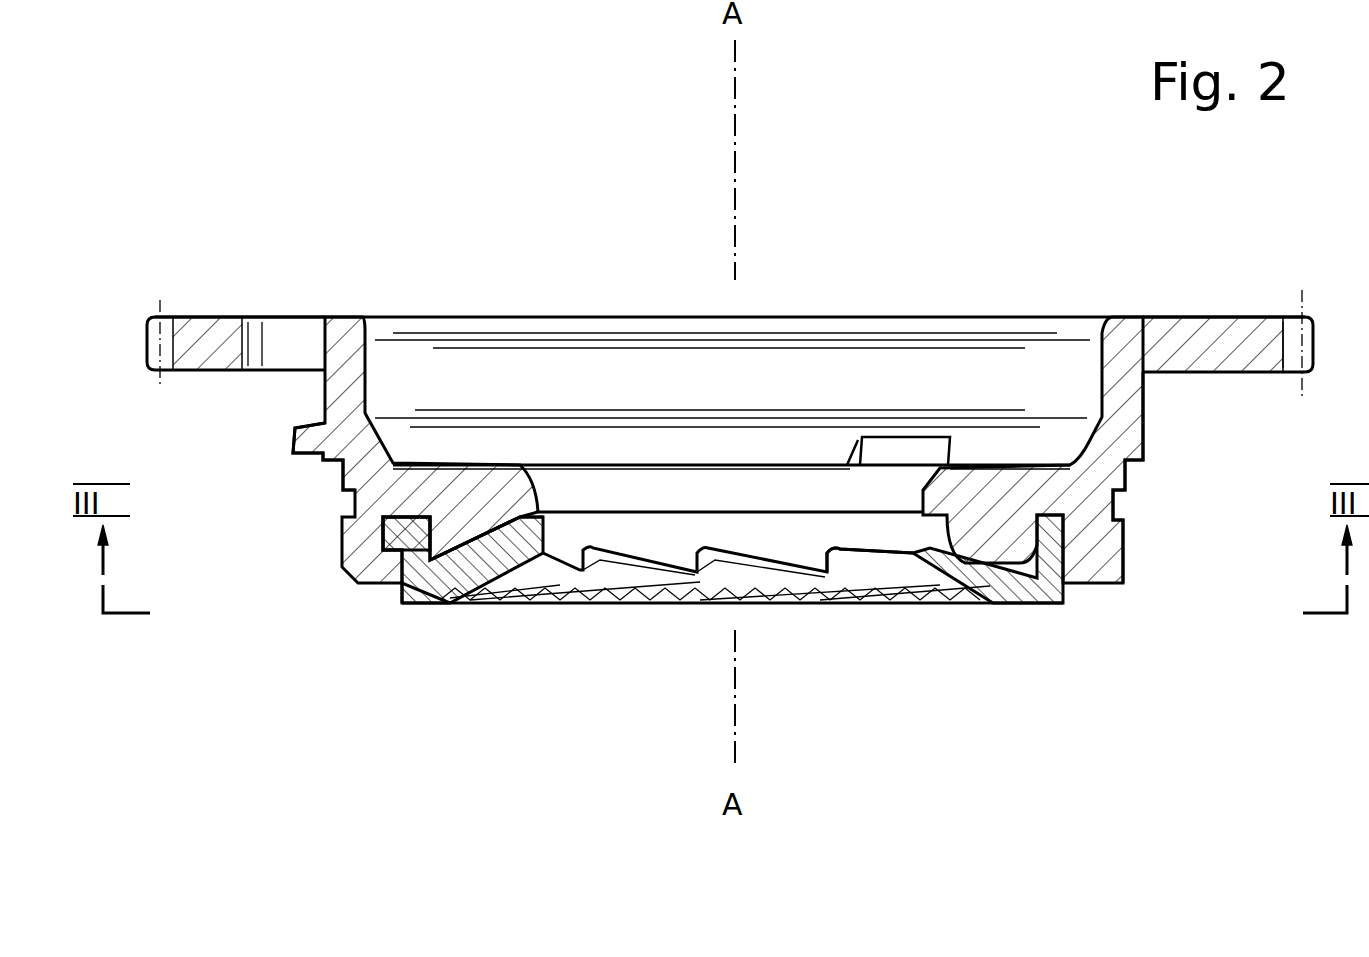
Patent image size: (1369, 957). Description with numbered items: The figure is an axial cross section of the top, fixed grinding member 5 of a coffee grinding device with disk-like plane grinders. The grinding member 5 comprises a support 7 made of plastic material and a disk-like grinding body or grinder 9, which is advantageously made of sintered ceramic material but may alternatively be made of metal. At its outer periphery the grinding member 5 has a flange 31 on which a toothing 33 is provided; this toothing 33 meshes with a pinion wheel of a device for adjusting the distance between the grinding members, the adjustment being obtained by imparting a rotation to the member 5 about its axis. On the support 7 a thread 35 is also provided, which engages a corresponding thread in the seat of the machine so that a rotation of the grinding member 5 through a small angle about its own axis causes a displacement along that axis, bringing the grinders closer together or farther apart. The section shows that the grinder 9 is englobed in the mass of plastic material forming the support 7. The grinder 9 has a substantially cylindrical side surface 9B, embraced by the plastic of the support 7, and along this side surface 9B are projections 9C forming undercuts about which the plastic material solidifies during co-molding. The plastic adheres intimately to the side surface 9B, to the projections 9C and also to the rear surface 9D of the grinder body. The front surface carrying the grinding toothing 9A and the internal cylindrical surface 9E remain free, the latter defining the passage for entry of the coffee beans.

The first grinding member 5 is at (985, 250).
The support 7 is at (1168, 432).
The grinder 9 is at (447, 600).
The toothing 9A is at (635, 600).
The cylindrical side surface 9B is at (392, 597).
The projections 9C is at (383, 527).
The rear surface 9D is at (505, 525).
The internal cylindrical surface 9E is at (800, 545).
The flange 31 is at (200, 330).
The toothing 33 is at (1315, 330).
The thread 35 is at (312, 456).